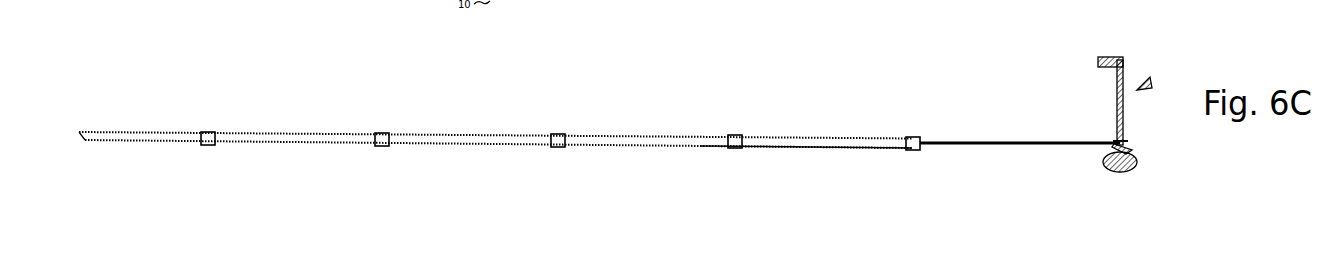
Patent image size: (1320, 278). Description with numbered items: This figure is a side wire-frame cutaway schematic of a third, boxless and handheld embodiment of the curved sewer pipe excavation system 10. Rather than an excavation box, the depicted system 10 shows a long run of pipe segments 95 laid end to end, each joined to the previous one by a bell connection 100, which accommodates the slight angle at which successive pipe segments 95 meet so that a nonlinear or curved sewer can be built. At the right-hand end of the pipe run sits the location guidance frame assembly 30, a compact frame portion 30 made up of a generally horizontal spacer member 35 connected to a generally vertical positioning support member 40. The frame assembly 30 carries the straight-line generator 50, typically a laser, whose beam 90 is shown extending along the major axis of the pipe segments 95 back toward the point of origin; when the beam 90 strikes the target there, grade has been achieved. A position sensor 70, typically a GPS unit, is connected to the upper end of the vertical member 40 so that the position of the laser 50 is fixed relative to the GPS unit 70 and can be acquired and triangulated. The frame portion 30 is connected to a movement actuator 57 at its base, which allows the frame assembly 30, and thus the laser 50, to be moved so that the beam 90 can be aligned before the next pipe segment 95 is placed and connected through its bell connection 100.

The system 10 is at (410, 175).
The location guidance frame assembly 30 is at (1140, 88).
The horizontal spacer member 35 is at (1128, 140).
The vertical positioning support member 40 is at (1117, 95).
The straight-line generator 50 is at (1114, 143).
The movement actuator 57 is at (1136, 168).
The position sensor 70 is at (1122, 56).
The laser beam 90 is at (997, 140).
The pipe segment 95 is at (797, 149).
The bell connection 100 is at (908, 150).